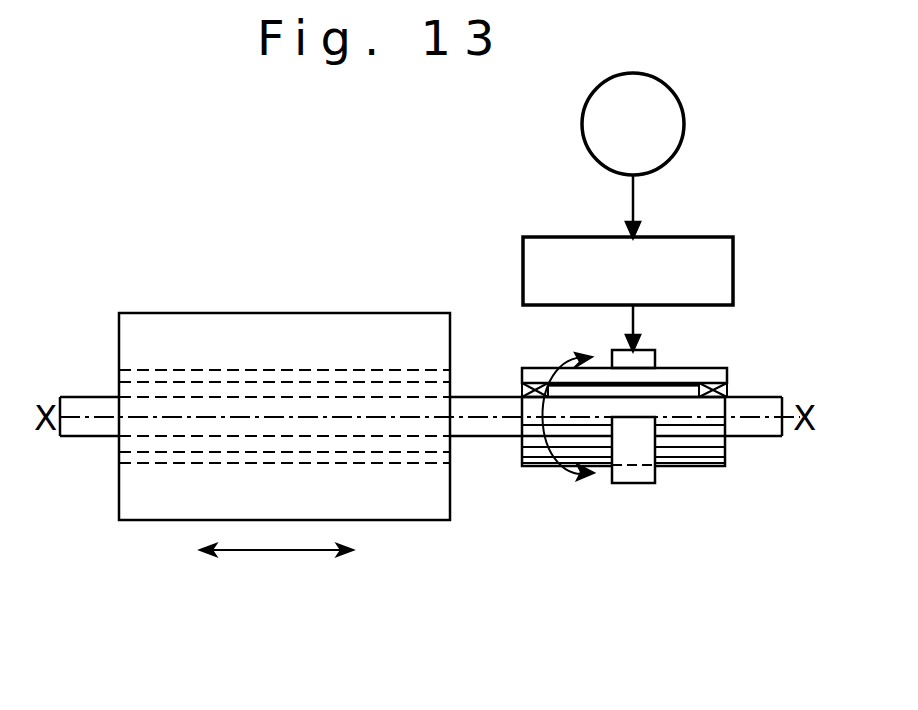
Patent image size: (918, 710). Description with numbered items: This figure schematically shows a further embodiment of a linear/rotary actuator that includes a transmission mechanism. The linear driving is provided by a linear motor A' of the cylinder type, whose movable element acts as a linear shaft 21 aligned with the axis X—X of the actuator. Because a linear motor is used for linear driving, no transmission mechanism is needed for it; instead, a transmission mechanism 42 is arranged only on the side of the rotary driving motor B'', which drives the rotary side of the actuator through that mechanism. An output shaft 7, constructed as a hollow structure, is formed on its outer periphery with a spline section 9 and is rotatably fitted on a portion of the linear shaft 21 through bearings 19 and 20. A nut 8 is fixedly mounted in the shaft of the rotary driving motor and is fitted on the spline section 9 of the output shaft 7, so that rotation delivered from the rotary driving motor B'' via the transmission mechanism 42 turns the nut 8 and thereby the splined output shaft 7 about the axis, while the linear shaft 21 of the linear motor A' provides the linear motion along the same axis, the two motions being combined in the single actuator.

The linear motor A' is at (284, 367).
The rotary driving motor B'' is at (604, 124).
The transmission mechanism 42 is at (738, 270).
The output shaft 7 is at (685, 368).
The bearing 19 is at (727, 387).
The bearing 20 is at (523, 387).
The linear shaft 21 is at (478, 430).
The spline section 9 is at (693, 467).
The nut 8 is at (628, 475).